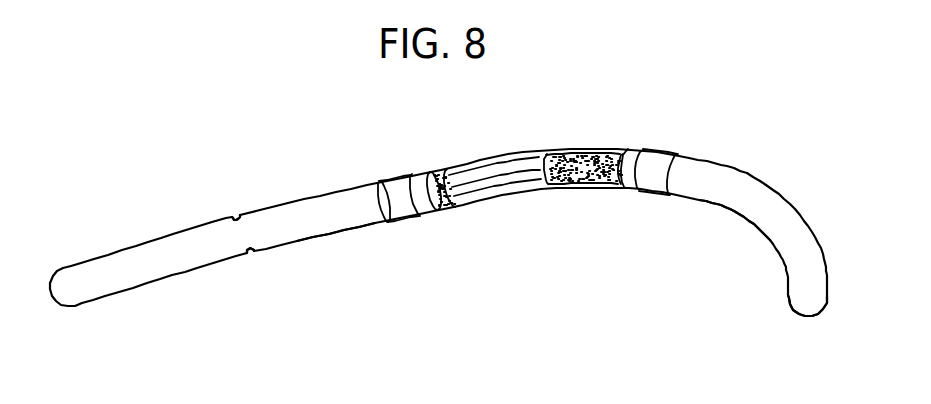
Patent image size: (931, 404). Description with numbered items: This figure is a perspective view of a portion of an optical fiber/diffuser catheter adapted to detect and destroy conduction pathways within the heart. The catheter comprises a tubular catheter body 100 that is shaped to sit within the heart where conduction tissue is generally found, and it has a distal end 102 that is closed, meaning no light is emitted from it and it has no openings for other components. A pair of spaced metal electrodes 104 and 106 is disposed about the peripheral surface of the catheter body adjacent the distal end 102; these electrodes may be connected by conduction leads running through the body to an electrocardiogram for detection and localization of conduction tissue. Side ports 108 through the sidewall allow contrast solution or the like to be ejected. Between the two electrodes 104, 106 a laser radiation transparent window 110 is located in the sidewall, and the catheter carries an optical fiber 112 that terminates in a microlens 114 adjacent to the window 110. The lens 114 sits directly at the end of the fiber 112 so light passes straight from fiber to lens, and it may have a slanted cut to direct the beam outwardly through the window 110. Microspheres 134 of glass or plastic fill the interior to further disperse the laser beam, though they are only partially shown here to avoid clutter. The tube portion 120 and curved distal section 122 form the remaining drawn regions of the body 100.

The tubular catheter body 100 is at (160, 292).
The distal end 102 is at (807, 317).
The metal electrode 104 is at (398, 186).
The metal electrode 106 is at (664, 160).
The side ports 108 is at (237, 213).
The laser radiation transparent window 110 is at (531, 167).
The optical fiber 112 is at (485, 186).
The microlens 114 is at (584, 193).
The outer tube 120 is at (339, 219).
The curved distal section 122 is at (737, 200).
The microspheres 134 is at (444, 172).